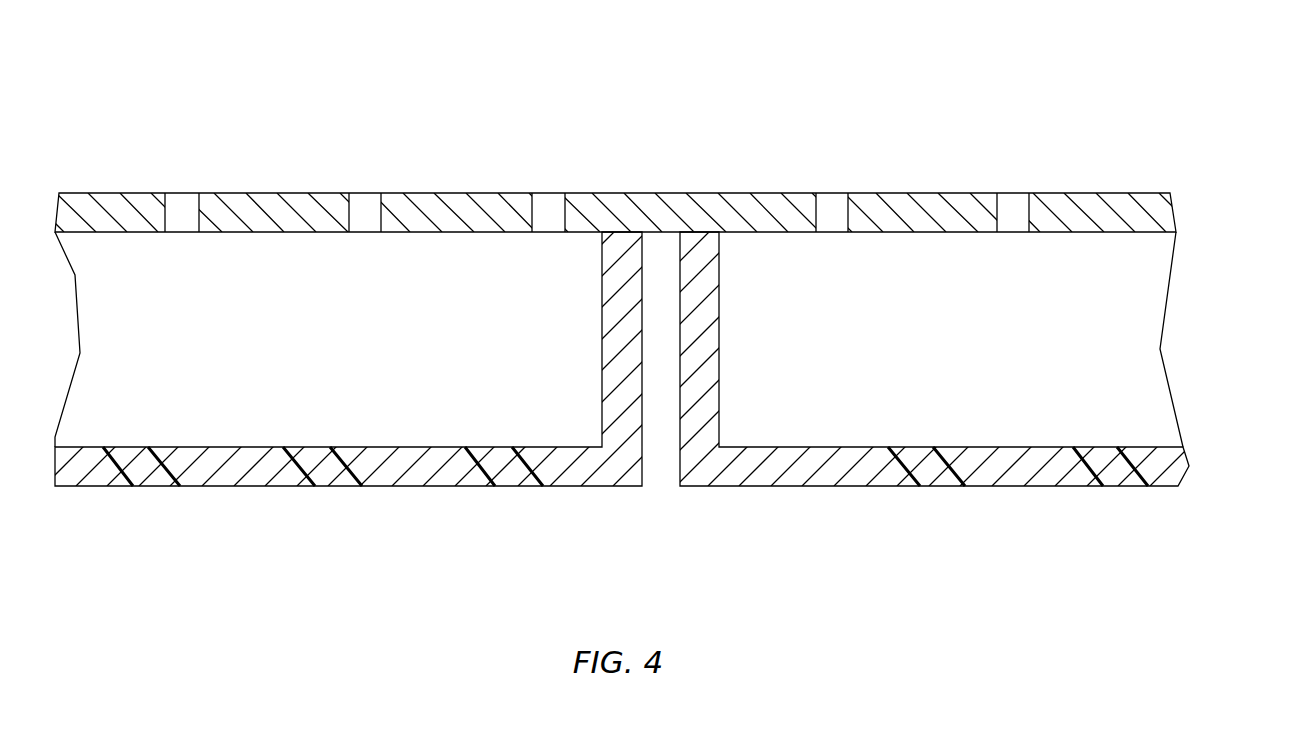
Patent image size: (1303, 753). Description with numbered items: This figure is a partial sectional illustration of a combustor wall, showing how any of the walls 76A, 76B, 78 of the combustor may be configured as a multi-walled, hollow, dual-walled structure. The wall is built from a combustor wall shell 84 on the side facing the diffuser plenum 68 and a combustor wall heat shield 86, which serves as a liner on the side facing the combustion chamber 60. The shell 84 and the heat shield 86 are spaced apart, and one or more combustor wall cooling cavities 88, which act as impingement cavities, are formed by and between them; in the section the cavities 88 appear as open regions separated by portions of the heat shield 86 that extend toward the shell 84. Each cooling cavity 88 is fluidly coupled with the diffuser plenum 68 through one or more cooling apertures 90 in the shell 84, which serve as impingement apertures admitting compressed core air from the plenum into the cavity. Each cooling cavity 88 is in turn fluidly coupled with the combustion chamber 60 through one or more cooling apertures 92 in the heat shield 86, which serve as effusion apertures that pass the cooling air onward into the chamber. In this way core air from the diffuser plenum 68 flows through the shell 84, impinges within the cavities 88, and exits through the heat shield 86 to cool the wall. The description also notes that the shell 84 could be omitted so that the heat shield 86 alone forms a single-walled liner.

The combustion chamber 60 is at (636, 612).
The diffuser plenum 68 is at (624, 87).
The wall 76A is at (664, 328).
The wall 76B is at (664, 328).
The wall 78 is at (664, 328).
The combustor wall shell 84 is at (436, 176).
The combustor wall heat shield 86 is at (598, 503).
The combustor wall cooling cavity 88 is at (302, 357).
The cooling aperture 90 is at (179, 198).
The cooling aperture 92 is at (150, 478).